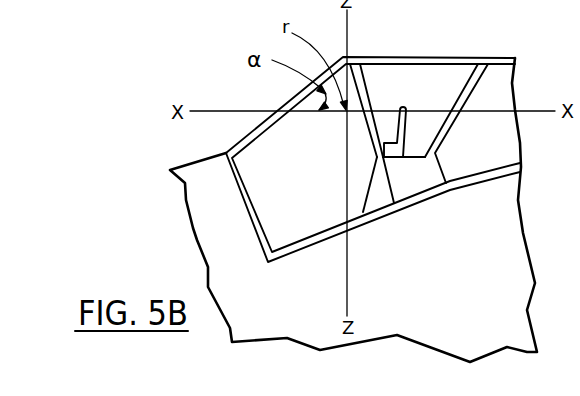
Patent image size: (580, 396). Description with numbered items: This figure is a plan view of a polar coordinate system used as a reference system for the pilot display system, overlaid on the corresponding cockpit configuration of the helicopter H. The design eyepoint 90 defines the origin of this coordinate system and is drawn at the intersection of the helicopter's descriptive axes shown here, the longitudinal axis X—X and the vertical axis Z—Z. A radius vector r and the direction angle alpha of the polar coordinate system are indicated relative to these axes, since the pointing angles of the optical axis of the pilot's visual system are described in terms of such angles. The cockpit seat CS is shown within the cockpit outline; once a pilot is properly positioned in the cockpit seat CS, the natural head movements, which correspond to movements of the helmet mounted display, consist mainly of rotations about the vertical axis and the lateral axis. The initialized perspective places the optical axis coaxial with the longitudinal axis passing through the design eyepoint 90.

The design eyepoint 90 is at (372, 112).
The cockpit seat CS is at (410, 126).
The helicopter H is at (466, 278).